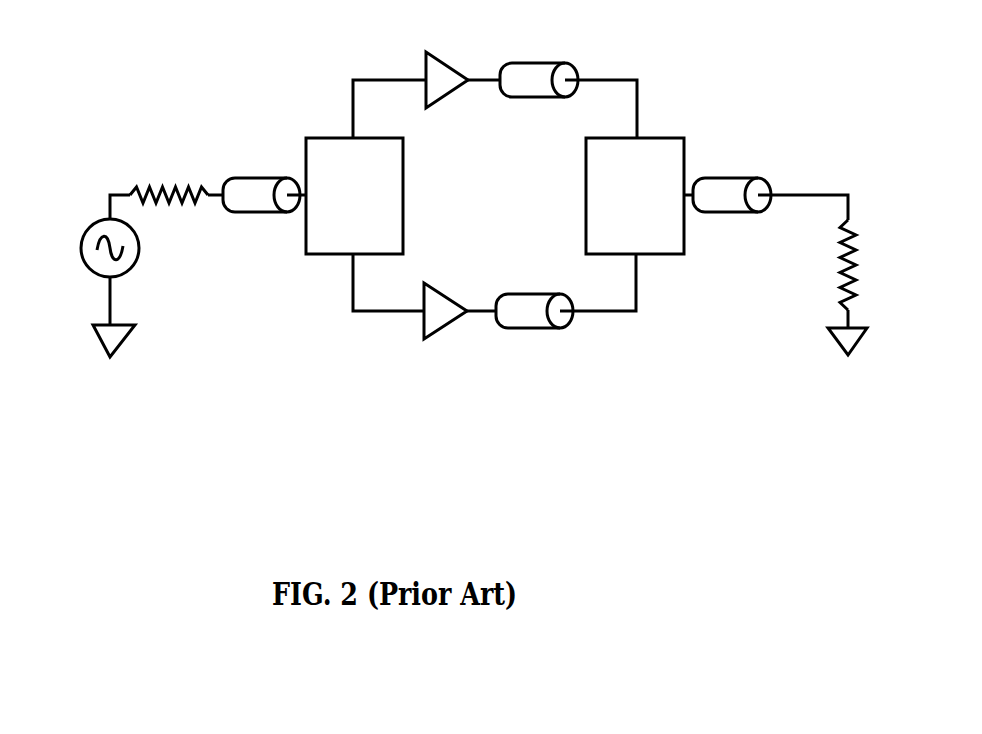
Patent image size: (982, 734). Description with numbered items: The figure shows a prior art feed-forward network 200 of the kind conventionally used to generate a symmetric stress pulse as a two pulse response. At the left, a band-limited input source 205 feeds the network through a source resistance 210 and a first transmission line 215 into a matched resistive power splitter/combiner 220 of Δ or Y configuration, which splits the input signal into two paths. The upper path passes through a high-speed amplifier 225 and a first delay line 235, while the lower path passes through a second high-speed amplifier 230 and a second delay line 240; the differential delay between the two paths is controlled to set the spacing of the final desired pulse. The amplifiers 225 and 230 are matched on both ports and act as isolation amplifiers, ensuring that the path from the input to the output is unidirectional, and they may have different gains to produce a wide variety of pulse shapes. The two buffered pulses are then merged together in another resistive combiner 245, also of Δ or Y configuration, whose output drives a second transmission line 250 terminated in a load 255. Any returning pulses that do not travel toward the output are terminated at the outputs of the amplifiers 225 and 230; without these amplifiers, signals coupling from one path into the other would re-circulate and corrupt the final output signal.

The prior art circuit 200 is at (370, 498).
The band-limited input source 205 is at (78, 288).
The source resistor 210 is at (169, 180).
The transmission line Z1 215 is at (261, 162).
The matched resistive power splitter/combiner 220 is at (354, 196).
The high-speed amplifier 225 is at (447, 68).
The high-speed amplifier 230 is at (445, 324).
The delay line 1 (Z2) 235 is at (539, 64).
The delay line 2 (Z2) 240 is at (543, 322).
The resistive combiner 245 is at (635, 196).
The transmission line Z1 250 is at (733, 168).
The load resistor 255 is at (861, 287).